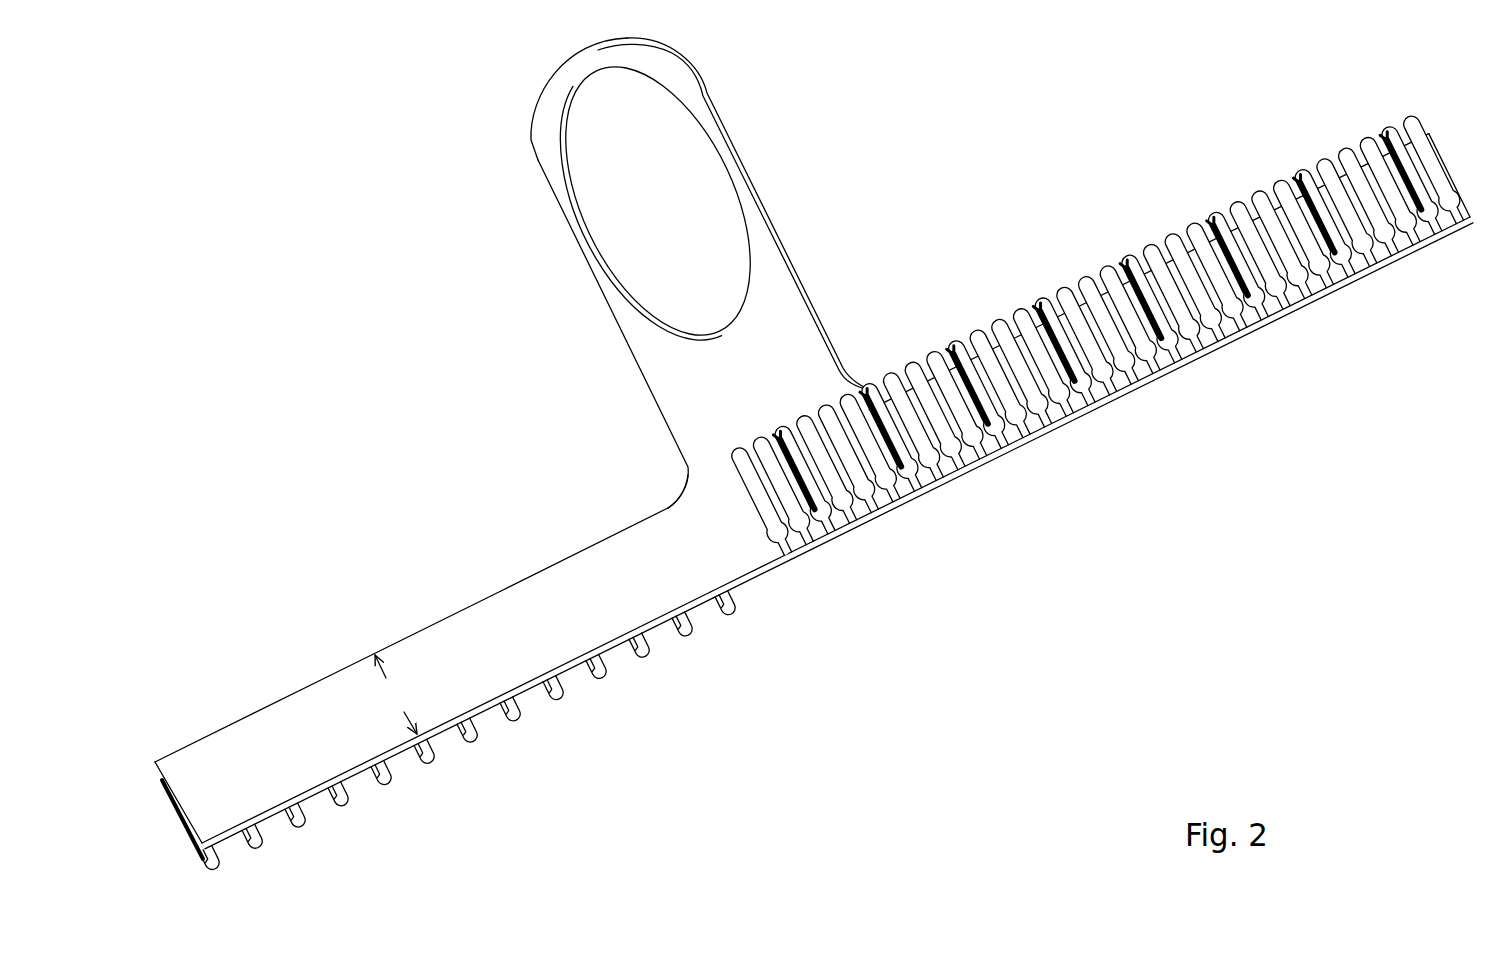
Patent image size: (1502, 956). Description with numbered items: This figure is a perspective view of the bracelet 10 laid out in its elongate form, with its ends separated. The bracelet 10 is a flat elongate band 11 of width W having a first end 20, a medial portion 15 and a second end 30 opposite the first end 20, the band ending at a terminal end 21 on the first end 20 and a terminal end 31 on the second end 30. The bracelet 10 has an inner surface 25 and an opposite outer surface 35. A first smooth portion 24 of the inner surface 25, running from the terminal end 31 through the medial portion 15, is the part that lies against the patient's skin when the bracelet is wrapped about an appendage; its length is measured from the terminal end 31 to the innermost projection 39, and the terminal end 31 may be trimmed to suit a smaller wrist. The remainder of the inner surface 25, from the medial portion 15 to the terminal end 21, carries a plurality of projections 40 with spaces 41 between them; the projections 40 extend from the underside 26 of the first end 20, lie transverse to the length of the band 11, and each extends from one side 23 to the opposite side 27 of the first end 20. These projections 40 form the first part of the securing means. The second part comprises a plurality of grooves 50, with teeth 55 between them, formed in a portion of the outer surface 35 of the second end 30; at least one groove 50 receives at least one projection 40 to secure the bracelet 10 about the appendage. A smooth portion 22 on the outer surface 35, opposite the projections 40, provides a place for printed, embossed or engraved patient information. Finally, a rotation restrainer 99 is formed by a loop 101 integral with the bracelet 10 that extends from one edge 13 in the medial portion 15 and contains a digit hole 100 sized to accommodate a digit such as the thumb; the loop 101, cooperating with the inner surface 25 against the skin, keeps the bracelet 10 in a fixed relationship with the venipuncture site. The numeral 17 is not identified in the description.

The bracelet 10 is at (428, 438).
The flat elongate band 11 is at (572, 588).
The one edge 13 is at (430, 625).
The medial portion 15 is at (728, 527).
The lower edge portion 17 is at (728, 527).
The first end 20 is at (247, 762).
The terminal end 21 is at (175, 803).
The smooth portion 22 is at (485, 648).
The one side 23 is at (320, 690).
The first smooth portion 24 is at (1125, 395).
The inner surface 25 is at (977, 472).
The underside 26 is at (313, 800).
The opposite side 27 is at (612, 642).
The second end 30 is at (1403, 106).
The terminal end 31 is at (1447, 173).
The outer surface 35 is at (675, 542).
The innermost projection 39 is at (727, 617).
The projections 40 is at (390, 782).
The spaces 41 is at (402, 763).
The grooves 50 is at (1183, 252).
The teeth 55 is at (1193, 283).
The rotation restrainer 99 is at (725, 98).
The digit hole 100 is at (655, 195).
The loop 101 is at (553, 108).